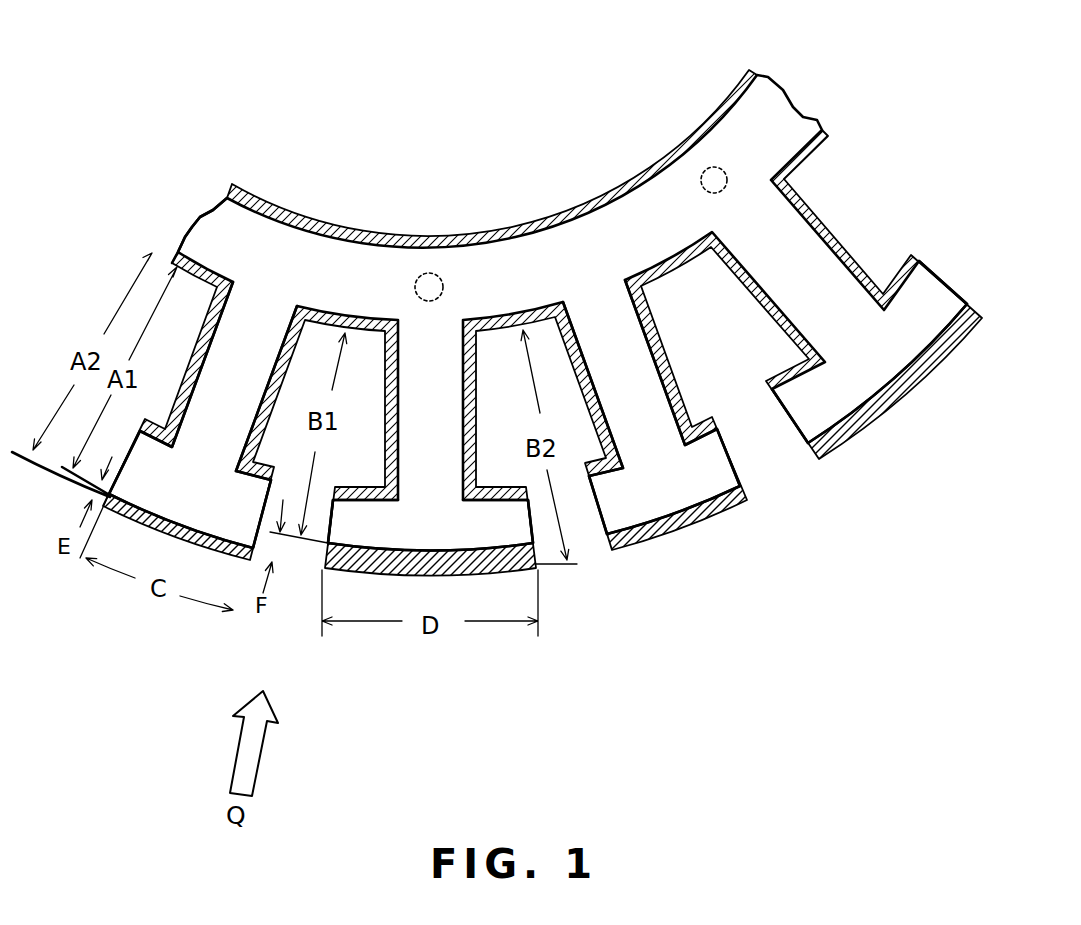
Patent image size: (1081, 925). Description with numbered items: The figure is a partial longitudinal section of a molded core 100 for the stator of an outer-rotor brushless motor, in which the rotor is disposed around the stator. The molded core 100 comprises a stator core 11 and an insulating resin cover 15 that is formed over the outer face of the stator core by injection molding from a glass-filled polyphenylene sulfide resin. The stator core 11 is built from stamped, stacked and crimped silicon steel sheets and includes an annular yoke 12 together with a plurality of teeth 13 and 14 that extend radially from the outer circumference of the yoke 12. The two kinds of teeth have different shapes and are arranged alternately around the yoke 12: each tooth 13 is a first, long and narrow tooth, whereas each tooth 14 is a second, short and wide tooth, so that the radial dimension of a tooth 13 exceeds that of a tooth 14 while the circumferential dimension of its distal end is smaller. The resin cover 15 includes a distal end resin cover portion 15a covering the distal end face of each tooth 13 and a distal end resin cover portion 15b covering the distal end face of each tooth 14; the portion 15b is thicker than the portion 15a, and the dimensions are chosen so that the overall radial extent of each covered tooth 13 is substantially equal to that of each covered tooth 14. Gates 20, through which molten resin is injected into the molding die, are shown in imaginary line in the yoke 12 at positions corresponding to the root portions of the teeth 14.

The molded core 100 is at (571, 348).
The stator core 11 is at (490, 232).
The annular yoke 12 is at (218, 229).
The tooth 13 is at (157, 493).
The tooth 14 is at (388, 524).
The insulating resin cover 15 is at (293, 201).
The distal end resin cover portion 15a is at (247, 553).
The distal end resin cover portion 15b is at (505, 566).
The gate 20 is at (433, 272).